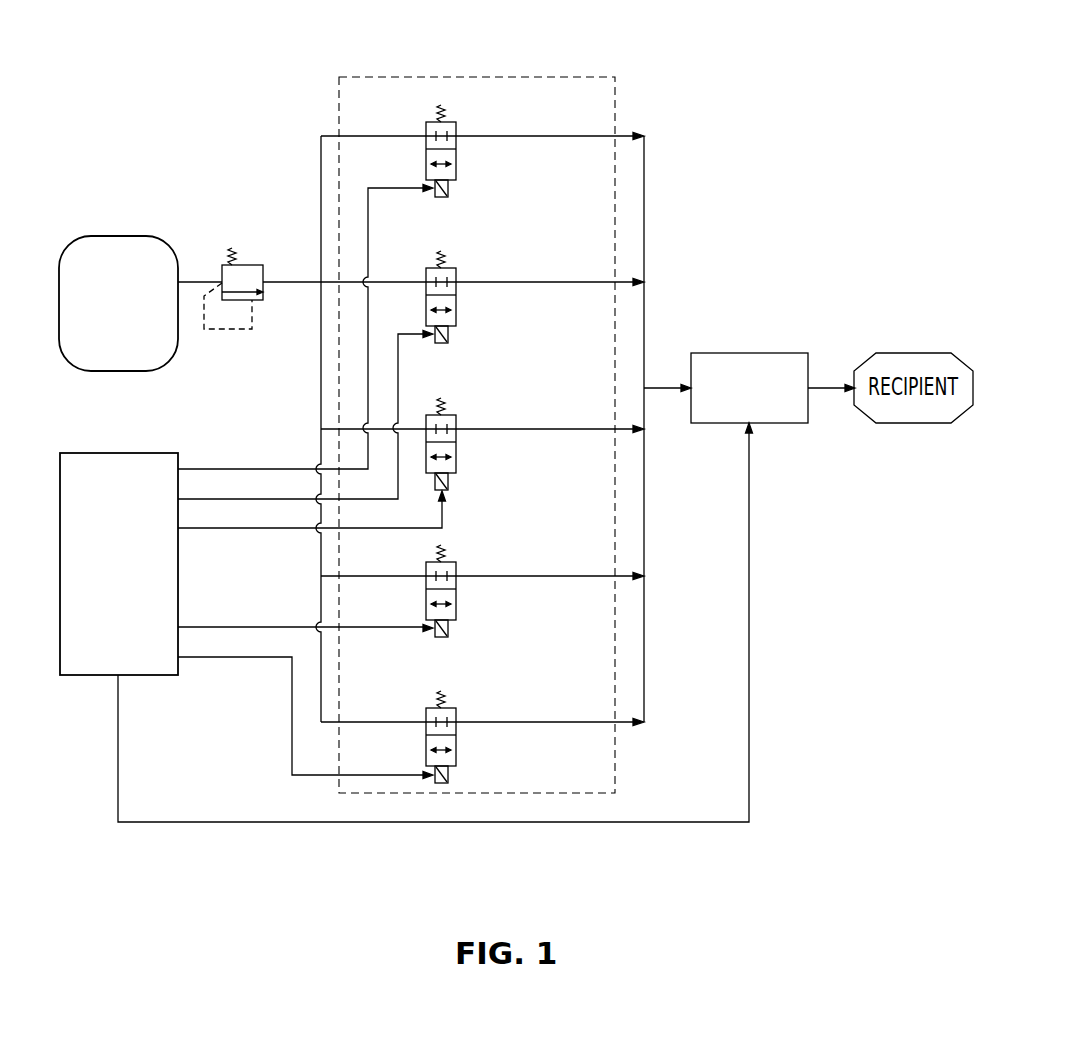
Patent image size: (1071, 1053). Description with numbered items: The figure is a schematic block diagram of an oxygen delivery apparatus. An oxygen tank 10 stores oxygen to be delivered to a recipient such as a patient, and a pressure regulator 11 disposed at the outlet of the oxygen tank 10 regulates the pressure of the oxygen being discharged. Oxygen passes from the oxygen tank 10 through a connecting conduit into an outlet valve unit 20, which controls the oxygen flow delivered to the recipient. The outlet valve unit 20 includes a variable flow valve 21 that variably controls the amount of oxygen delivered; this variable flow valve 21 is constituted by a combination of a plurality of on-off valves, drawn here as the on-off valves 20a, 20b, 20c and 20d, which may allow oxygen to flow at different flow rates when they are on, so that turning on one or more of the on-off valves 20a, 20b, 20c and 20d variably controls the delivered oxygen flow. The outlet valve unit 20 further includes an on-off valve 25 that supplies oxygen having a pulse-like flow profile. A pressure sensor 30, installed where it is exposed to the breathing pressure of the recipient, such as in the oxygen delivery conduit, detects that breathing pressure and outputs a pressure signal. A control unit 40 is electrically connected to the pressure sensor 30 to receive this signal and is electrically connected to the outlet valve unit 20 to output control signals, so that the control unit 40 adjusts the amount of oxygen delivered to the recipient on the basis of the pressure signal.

The oxygen tank 10 is at (118, 236).
The pressure regulator 11 is at (253, 265).
The outlet valve unit 20 is at (388, 77).
The variable flow valve 21 is at (522, 92).
The first solenoid valve 20a is at (457, 157).
The second solenoid valve 20b is at (457, 303).
The third solenoid valve 20c is at (457, 450).
The fourth solenoid valve 20d is at (457, 597).
The on-off valve 25 is at (457, 743).
The pressure sensor 30 is at (777, 353).
The control unit 40 is at (93, 676).